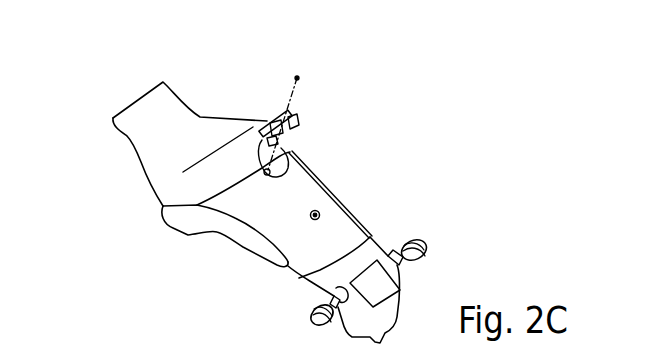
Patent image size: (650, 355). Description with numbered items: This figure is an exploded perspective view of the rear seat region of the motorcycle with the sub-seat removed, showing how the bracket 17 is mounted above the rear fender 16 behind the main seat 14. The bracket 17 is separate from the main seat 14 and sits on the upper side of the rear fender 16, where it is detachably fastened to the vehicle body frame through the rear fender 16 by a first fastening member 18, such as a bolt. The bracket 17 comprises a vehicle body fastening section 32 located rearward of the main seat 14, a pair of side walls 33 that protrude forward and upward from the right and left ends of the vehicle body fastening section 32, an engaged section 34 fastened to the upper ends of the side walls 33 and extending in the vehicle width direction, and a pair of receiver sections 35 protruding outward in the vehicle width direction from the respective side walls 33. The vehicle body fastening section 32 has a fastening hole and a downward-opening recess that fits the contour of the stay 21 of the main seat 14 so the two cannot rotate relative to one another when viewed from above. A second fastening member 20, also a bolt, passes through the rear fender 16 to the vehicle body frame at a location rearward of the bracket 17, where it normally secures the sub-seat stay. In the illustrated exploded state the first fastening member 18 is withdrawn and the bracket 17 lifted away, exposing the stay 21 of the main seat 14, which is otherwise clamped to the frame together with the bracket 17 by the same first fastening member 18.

The main seat 14 is at (196, 118).
The rear fender 16 is at (251, 234).
The bracket 17 is at (279, 102).
The first fastening member 18 is at (299, 76).
The second fastening member 20 is at (319, 212).
The stay 21 is at (296, 161).
The vehicle body fastening section 32 is at (298, 143).
The side walls 33 is at (256, 124).
The engaged section 34 is at (267, 122).
The receiver sections 35 is at (291, 114).